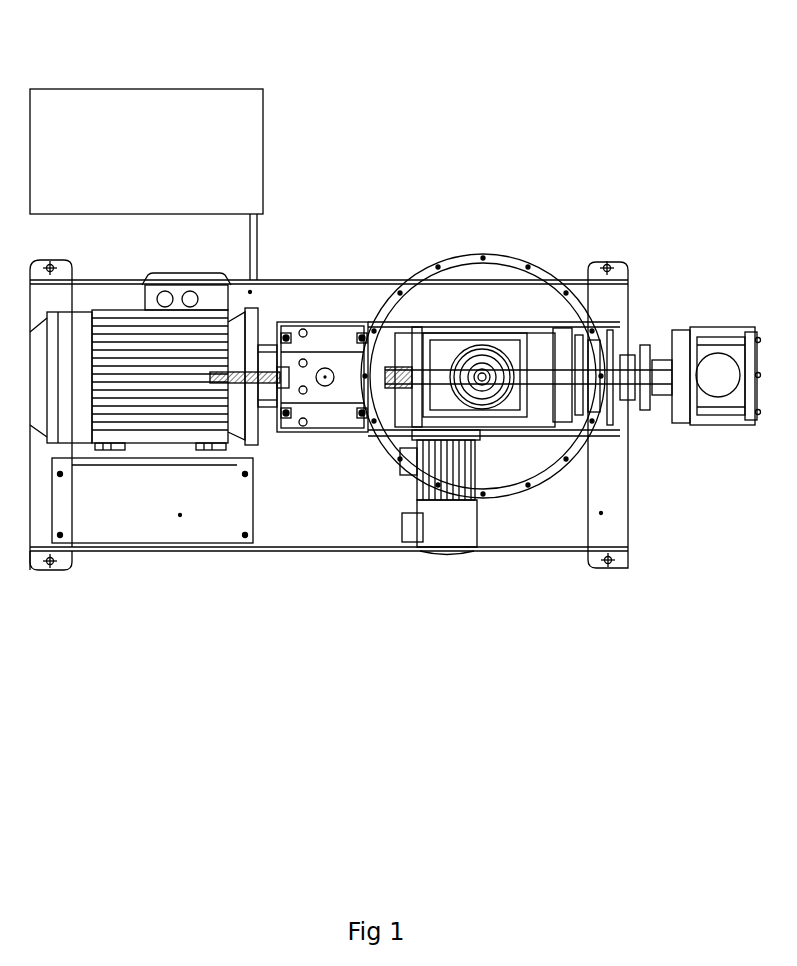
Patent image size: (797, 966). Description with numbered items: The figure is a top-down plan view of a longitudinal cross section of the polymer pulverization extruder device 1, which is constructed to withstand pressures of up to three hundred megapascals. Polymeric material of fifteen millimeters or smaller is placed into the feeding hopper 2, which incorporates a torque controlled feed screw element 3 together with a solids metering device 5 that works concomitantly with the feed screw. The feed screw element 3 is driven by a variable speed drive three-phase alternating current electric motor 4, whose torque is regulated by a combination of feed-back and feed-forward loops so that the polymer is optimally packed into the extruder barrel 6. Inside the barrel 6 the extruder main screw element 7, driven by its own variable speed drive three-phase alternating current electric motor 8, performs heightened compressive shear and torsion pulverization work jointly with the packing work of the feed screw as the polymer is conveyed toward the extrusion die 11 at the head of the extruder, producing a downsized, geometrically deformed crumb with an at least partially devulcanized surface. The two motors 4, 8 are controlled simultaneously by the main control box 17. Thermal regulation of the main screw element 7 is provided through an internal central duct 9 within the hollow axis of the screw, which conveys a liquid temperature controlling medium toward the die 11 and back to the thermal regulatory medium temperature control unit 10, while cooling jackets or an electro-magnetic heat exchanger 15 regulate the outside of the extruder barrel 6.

The polymer pulverization extruder device 1 is at (378, 553).
The feeding hopper 2 is at (427, 264).
The torque controlled feed screw element 3 is at (495, 395).
The variable speed drive three-phase alternating current electric motor 4 is at (447, 528).
The solids metering device 5 is at (479, 300).
The extruder barrel 6 is at (657, 343).
The extruder main screw element 7 is at (541, 340).
The variable speed drive three-phase alternating current electric motor 8 is at (197, 343).
The internal central duct 9 is at (390, 368).
The thermal regulatory medium temperature control unit 10 is at (117, 115).
The extrusion die 11 is at (737, 352).
The cooling jackets or electro-magnetic heat exchanger 15 is at (308, 434).
The polymer pulverization extruder main control box 17 is at (138, 515).